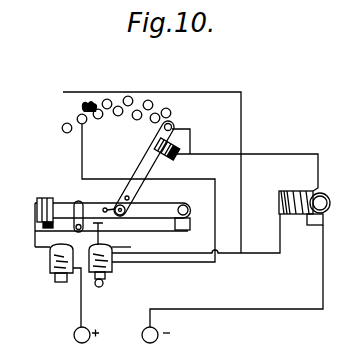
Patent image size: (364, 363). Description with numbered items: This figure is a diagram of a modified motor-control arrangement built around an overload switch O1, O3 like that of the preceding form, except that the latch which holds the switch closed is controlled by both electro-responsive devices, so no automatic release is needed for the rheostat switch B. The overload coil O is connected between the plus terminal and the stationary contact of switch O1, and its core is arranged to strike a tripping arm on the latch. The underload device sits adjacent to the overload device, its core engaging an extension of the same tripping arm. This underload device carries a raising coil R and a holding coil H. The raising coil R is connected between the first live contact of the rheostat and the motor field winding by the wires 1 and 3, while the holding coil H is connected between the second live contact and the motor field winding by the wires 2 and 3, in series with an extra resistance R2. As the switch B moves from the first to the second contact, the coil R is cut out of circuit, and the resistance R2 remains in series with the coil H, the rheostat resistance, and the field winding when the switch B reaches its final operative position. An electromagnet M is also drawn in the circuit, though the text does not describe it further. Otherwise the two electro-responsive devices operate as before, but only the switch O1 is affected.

The extra resistance R2 is at (84, 104).
The wire 1 is at (82, 163).
The wire 2 is at (158, 172).
The wire 3 is at (215, 192).
The switch B is at (142, 165).
The overload switch O1 is at (41, 205).
The overload switch O3 is at (124, 216).
The electromagnet M is at (298, 191).
The overload coil O is at (50, 260).
The raising coil R is at (110, 270).
The holding coil H is at (127, 250).